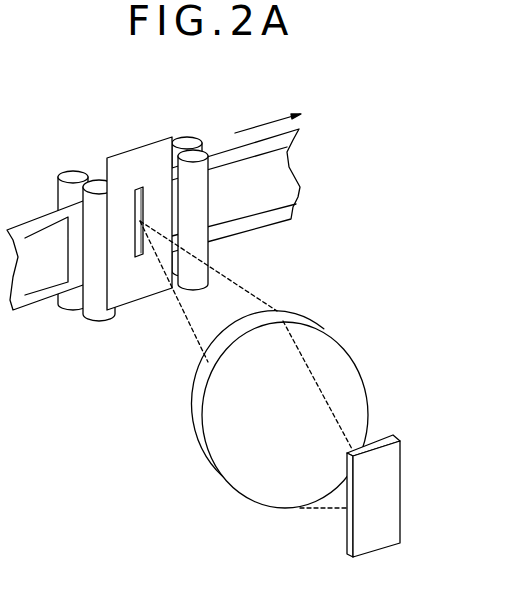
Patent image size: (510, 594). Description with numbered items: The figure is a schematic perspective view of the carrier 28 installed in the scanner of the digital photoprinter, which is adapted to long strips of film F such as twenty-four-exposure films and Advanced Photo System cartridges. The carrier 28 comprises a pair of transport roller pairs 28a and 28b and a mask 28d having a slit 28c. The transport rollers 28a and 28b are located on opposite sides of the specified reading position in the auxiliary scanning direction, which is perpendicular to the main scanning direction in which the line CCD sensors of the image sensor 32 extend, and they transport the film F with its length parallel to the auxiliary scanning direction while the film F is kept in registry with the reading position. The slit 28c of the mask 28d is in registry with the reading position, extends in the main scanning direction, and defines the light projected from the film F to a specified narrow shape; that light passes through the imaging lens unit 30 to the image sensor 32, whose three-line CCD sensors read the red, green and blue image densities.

The carrier 28 is at (78, 142).
The transport roller pair 28a is at (97, 307).
The transport roller pair 28b is at (195, 224).
The slit 28c is at (140, 188).
The mask 28d is at (137, 283).
The film F is at (272, 179).
The imaging lens unit 30 is at (327, 350).
The image sensor 32 is at (387, 490).